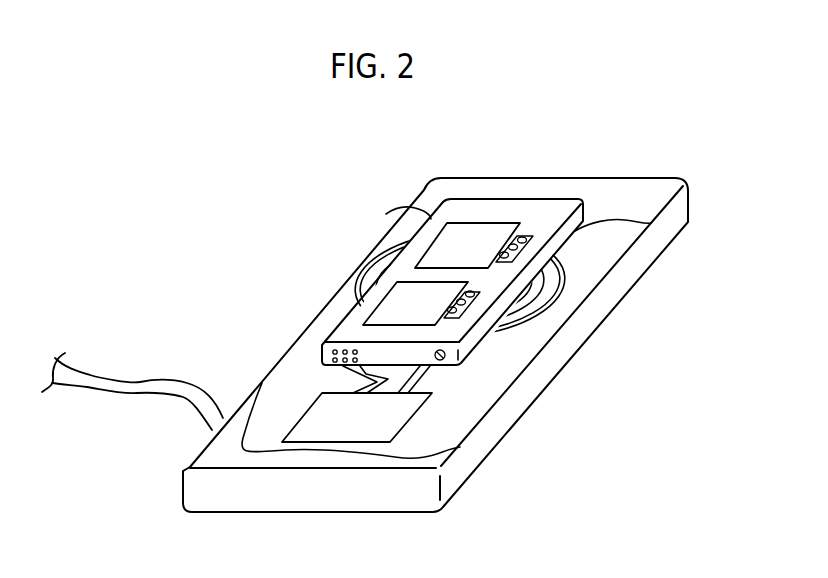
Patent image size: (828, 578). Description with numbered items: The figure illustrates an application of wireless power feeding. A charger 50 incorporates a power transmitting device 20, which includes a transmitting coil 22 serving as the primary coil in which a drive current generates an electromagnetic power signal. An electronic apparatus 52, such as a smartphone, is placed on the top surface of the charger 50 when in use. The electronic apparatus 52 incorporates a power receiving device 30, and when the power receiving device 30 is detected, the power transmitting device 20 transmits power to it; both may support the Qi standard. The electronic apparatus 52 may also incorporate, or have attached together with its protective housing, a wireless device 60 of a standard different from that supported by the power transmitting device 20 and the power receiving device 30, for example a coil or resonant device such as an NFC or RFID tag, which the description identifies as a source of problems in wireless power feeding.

The power transmitting device 20 is at (397, 418).
The transmitting coil 22 is at (560, 286).
The power receiving device 30 is at (407, 235).
The charger 50 is at (617, 178).
The electronic apparatus 52 is at (428, 240).
The wireless device 60 is at (498, 232).